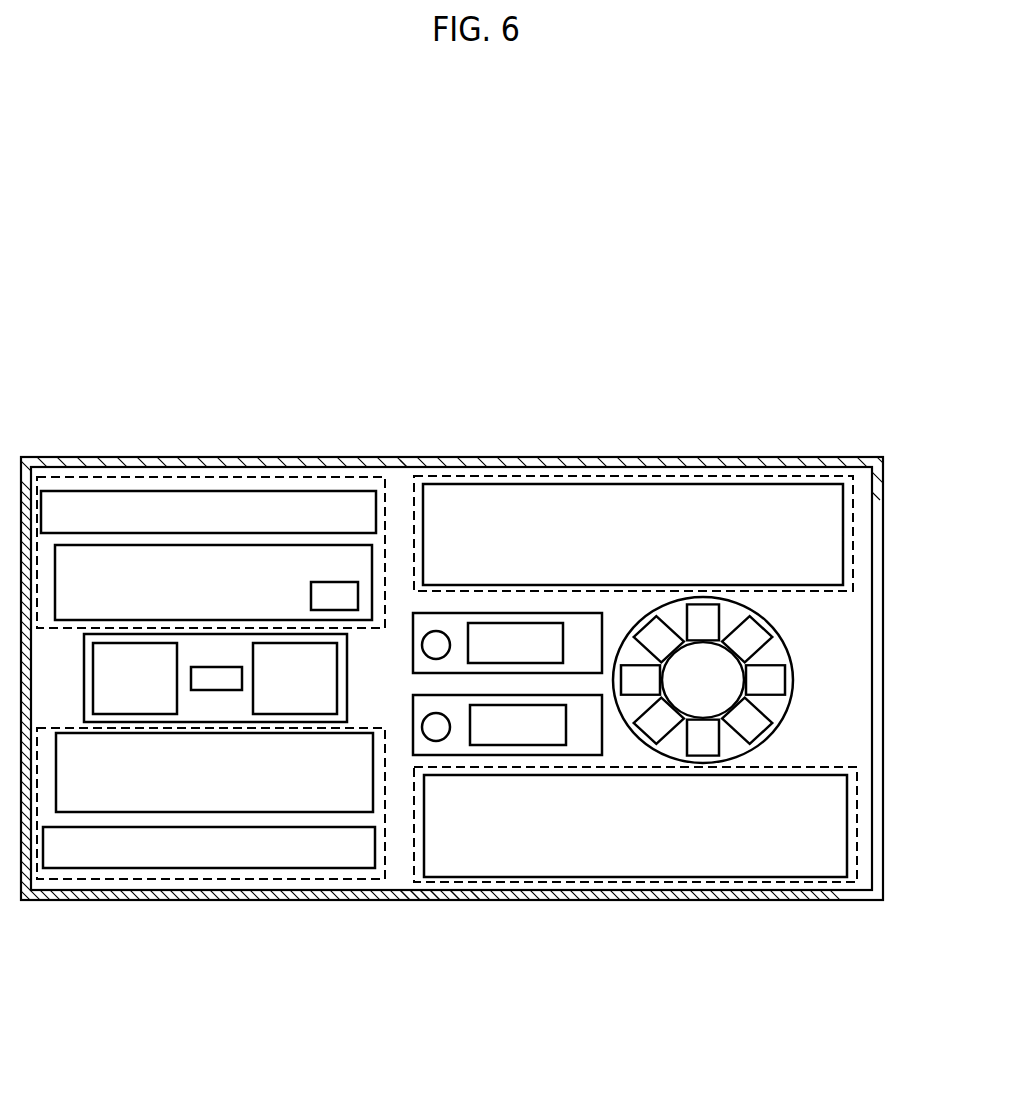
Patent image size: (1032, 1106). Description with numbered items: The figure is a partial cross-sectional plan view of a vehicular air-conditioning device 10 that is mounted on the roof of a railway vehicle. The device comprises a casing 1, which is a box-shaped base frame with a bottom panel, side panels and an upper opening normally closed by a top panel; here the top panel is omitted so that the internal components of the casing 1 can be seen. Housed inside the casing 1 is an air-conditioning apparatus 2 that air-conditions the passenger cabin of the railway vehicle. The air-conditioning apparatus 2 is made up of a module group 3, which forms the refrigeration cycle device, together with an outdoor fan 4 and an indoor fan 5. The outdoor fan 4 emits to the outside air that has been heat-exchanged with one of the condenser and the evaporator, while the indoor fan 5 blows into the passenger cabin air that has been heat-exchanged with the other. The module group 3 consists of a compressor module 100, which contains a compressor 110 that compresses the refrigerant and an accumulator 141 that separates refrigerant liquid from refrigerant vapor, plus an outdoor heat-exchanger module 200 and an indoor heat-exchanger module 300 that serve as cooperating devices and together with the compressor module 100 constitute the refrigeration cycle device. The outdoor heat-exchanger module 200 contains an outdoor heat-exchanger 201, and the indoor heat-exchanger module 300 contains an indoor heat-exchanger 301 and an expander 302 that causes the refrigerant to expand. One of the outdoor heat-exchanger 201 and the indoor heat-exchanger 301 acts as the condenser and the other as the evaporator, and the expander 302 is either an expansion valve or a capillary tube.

The casing 1 is at (883, 682).
The air-conditioning apparatus 2 is at (680, 315).
The module group 3 is at (393, 372).
The outdoor fan 4 is at (705, 680).
The indoor fan 5 is at (218, 678).
The vehicular air-conditioning device 10 is at (448, 190).
The compressor module 100 is at (508, 610).
The compressor 110 is at (520, 733).
The accumulator 141 is at (436, 733).
The outdoor heat-exchanger module 200 is at (600, 474).
The outdoor heat-exchanger 201 is at (810, 495).
The indoor heat-exchanger module 300 is at (390, 476).
The indoor heat-exchanger 301 is at (92, 557).
The expander 302 is at (335, 600).